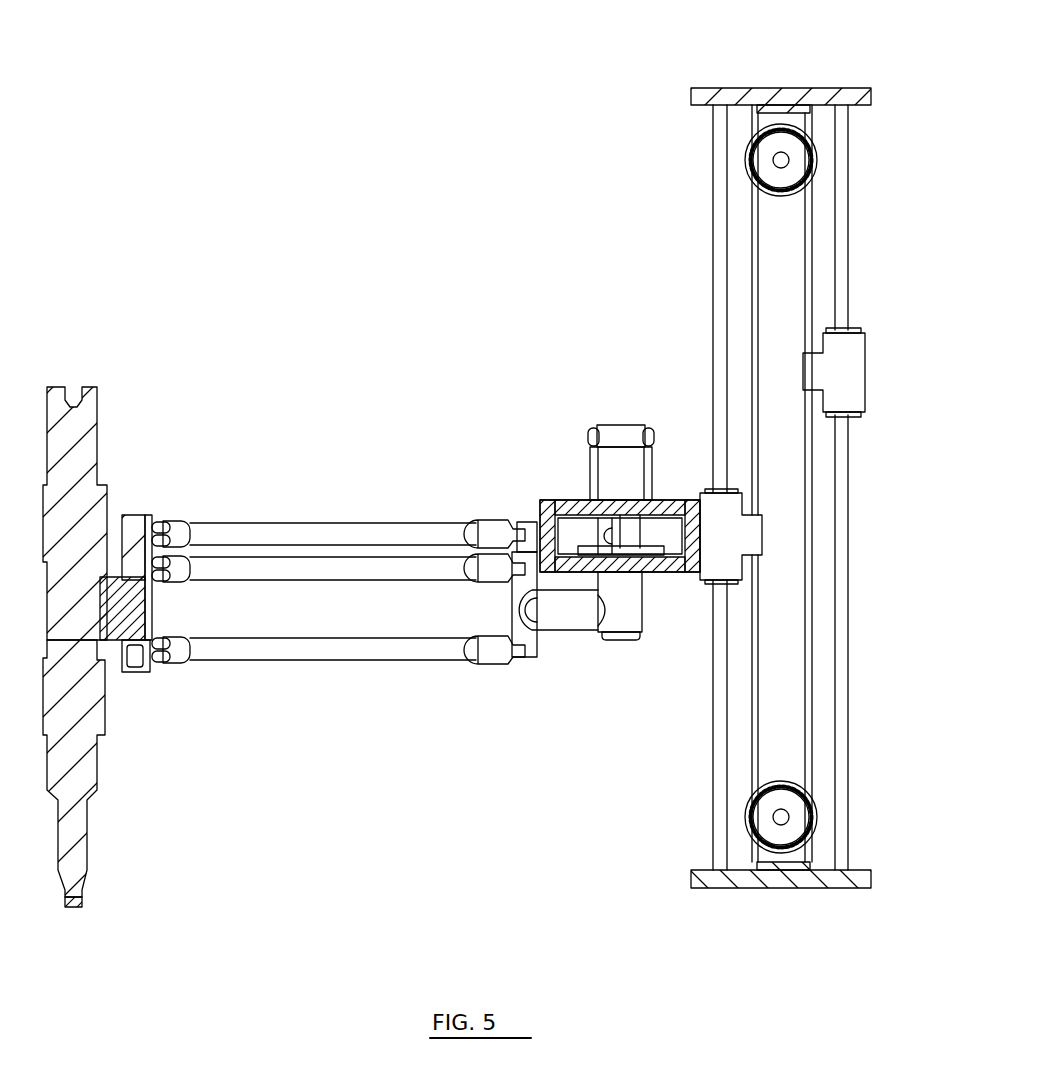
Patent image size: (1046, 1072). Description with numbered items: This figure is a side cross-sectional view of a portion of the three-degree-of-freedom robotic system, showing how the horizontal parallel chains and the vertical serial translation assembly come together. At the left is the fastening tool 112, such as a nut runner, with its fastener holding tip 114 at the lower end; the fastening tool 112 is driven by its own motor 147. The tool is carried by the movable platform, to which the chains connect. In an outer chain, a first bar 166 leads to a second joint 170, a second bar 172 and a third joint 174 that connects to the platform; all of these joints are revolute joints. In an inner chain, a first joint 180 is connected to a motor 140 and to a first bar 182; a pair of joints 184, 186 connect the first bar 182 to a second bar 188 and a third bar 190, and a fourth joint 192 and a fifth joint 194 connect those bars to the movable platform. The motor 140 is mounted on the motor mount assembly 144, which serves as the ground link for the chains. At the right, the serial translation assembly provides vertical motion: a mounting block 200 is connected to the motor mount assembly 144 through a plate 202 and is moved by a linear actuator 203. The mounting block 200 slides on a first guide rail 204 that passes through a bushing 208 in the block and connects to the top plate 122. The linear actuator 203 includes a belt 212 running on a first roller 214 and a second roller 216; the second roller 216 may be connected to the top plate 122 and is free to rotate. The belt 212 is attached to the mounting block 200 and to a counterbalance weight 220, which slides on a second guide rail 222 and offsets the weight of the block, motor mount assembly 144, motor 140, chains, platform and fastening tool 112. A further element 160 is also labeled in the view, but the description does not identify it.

The fastening tool 112 is at (90, 752).
The fastener holding tip 114 is at (78, 903).
The top plate 122 is at (755, 83).
The motor 140 is at (625, 456).
The motor mount assembly 144 is at (541, 488).
The motor of the fastening tool 147 is at (90, 410).
The piston 160 is at (625, 530).
The first bar 166 is at (578, 515).
The second joint 170 is at (490, 520).
The second bar 172 is at (285, 522).
The third joint 174 is at (172, 522).
The first joint 180 is at (620, 625).
The first bar 182 is at (570, 620).
The second joint 184 is at (503, 588).
The third joint 186 is at (490, 665).
The second bar 188 is at (330, 581).
The third bar 190 is at (375, 661).
The fourth joint 192 is at (175, 582).
The fifth joint 194 is at (178, 663).
The mounting block 200 is at (712, 565).
The plate 202 is at (693, 500).
The linear actuator 203 is at (800, 460).
The first guide rail 204 is at (718, 262).
The bushing 208 is at (732, 489).
The belt 212 is at (740, 207).
The first roller 214 is at (770, 160).
The second roller 216 is at (797, 785).
The counterbalance weight 220 is at (874, 345).
The second guide rail 222 is at (852, 135).